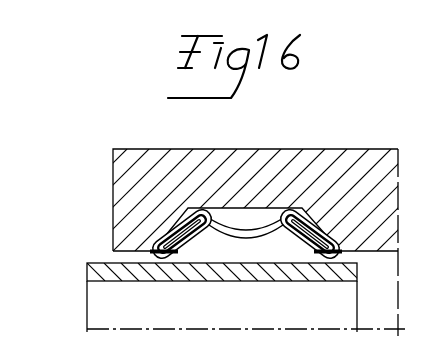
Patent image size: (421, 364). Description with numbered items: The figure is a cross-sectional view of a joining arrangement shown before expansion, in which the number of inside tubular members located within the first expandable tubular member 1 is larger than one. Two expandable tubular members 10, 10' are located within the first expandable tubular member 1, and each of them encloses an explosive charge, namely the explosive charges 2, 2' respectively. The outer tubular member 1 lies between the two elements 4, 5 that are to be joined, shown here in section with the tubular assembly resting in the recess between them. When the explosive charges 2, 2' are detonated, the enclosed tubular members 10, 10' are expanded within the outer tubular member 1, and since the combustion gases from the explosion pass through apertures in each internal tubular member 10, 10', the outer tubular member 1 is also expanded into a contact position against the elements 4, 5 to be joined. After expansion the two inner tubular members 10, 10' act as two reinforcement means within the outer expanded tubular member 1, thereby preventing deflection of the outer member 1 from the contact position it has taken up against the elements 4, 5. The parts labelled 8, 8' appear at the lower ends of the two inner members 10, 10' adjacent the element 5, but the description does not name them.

The first expandable tubular member 1 is at (227, 240).
The explosive charge 2 is at (182, 185).
The explosive charge 2' is at (310, 186).
The element to be joined 4 is at (358, 163).
The element to be joined 5 is at (99, 268).
The bearing foot 8 is at (155, 279).
The bearing foot 8' is at (323, 280).
The inside expandable tubular member 10 is at (182, 264).
The inside expandable tubular member 10' is at (294, 264).